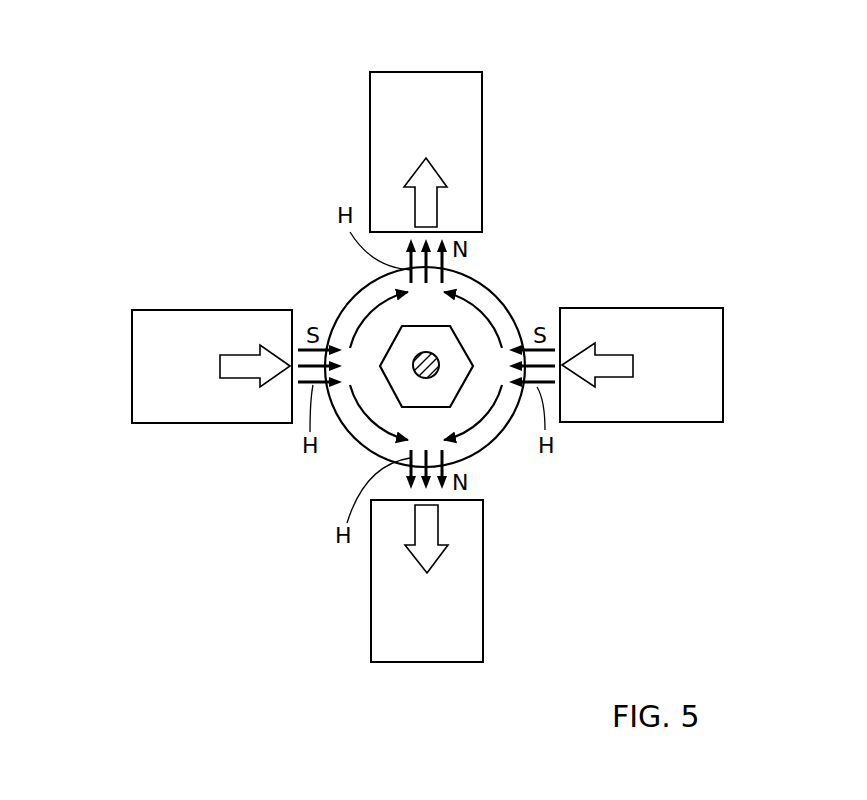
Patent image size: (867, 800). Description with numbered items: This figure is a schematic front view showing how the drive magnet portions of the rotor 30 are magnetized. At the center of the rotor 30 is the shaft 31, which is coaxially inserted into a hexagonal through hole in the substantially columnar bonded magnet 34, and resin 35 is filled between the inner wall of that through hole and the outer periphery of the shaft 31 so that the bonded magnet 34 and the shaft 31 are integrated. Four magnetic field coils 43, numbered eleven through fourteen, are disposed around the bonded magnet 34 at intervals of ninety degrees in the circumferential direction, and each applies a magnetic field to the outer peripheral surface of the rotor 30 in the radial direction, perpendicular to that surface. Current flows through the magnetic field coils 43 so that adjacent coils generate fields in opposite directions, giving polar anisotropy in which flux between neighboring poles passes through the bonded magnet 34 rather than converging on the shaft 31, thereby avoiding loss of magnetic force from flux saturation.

The rotor 30 is at (341, 290).
The shaft 31 is at (435, 377).
The bonded magnet 34 is at (487, 302).
The resin 35 is at (420, 395).
The magnetic field coil 43 is at (463, 145).